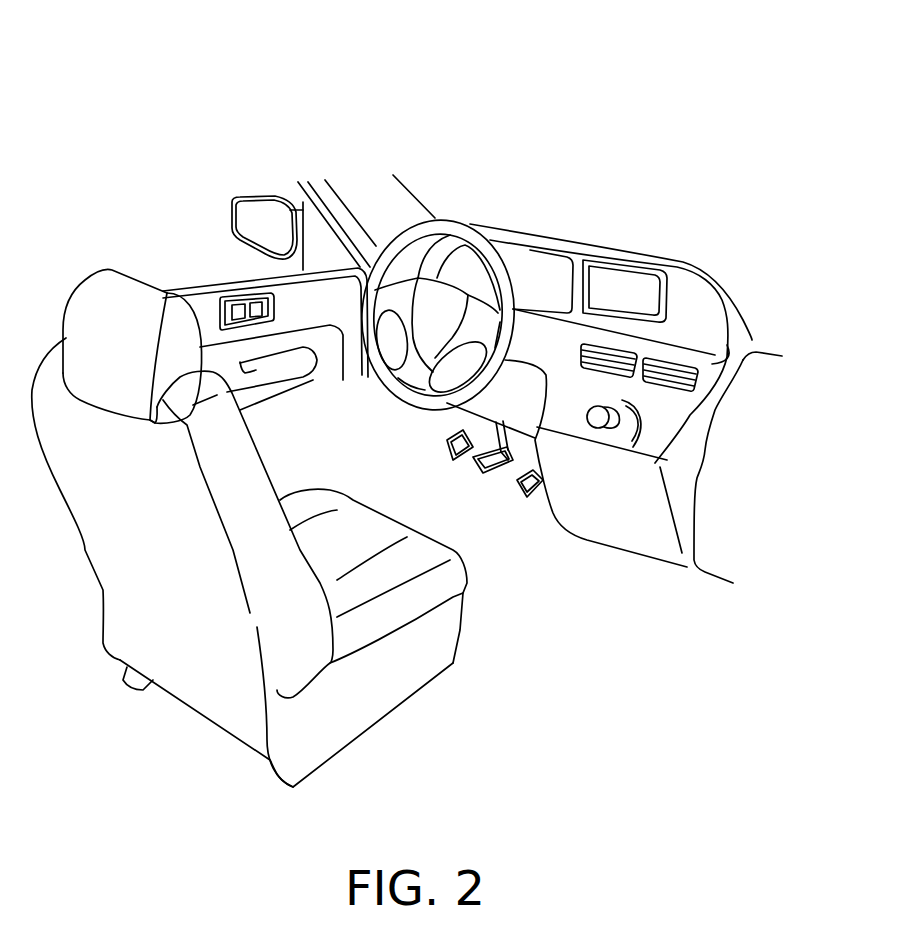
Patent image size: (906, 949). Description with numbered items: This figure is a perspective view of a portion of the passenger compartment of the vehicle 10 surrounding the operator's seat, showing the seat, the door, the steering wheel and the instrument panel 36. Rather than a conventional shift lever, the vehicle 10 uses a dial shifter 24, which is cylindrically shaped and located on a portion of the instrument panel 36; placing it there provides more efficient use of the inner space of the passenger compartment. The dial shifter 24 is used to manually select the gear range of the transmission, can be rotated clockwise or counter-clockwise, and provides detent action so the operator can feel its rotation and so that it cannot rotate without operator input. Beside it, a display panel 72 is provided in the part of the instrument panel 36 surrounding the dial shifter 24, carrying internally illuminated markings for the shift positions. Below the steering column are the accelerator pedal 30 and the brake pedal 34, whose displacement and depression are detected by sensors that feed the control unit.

The vehicle 10 is at (102, 108).
The dial shifter 24 is at (598, 406).
The accelerator pedal 30 is at (520, 500).
The brake pedal 34 is at (487, 461).
The instrument panel 36 is at (712, 364).
The display panel 72 is at (640, 413).